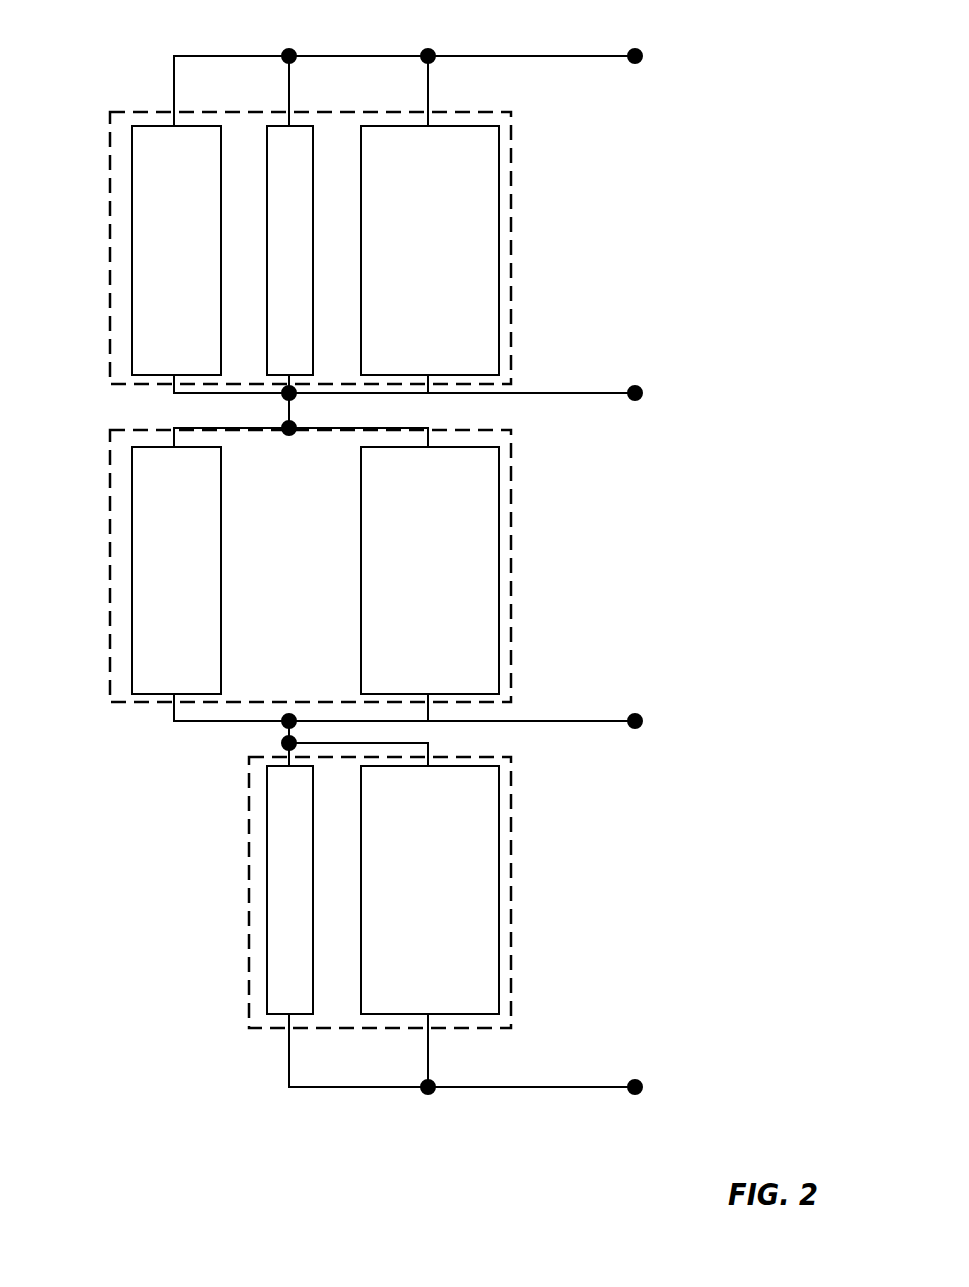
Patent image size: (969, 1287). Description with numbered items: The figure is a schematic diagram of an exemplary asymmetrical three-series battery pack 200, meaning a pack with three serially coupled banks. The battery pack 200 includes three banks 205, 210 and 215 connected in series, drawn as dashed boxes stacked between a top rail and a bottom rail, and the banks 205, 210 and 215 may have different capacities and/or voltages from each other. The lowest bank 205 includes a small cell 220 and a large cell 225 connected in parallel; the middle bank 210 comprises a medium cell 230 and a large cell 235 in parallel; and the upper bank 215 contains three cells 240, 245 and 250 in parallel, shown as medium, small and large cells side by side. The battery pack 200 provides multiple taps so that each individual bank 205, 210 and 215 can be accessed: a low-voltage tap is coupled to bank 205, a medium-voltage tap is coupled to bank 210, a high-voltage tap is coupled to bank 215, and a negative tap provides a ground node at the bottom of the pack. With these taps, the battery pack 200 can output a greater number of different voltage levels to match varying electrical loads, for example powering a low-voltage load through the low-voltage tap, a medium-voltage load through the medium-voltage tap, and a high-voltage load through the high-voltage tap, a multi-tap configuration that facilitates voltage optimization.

The battery pack 200 is at (130, 35).
The bank 205 is at (248, 886).
The bank 210 is at (111, 570).
The bank 215 is at (111, 250).
The small cell 220 is at (290, 890).
The large cell 225 is at (430, 890).
The medium cell 230 is at (176, 570).
The large cell 235 is at (430, 570).
The cell 240 is at (176, 250).
The cell 245 is at (290, 250).
The cell 250 is at (430, 250).